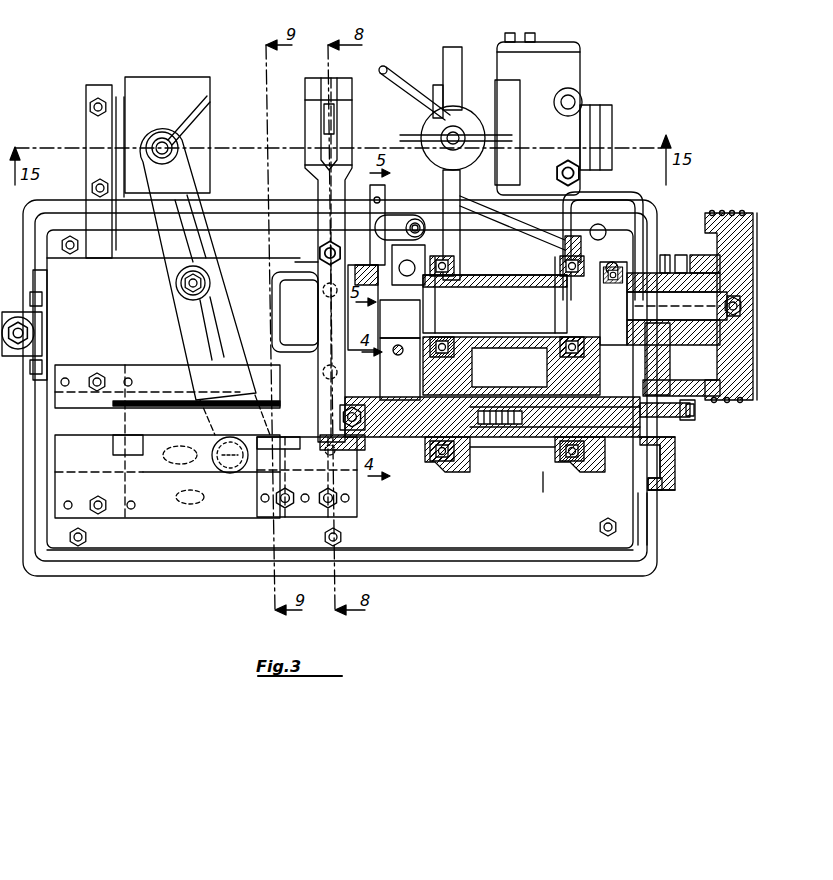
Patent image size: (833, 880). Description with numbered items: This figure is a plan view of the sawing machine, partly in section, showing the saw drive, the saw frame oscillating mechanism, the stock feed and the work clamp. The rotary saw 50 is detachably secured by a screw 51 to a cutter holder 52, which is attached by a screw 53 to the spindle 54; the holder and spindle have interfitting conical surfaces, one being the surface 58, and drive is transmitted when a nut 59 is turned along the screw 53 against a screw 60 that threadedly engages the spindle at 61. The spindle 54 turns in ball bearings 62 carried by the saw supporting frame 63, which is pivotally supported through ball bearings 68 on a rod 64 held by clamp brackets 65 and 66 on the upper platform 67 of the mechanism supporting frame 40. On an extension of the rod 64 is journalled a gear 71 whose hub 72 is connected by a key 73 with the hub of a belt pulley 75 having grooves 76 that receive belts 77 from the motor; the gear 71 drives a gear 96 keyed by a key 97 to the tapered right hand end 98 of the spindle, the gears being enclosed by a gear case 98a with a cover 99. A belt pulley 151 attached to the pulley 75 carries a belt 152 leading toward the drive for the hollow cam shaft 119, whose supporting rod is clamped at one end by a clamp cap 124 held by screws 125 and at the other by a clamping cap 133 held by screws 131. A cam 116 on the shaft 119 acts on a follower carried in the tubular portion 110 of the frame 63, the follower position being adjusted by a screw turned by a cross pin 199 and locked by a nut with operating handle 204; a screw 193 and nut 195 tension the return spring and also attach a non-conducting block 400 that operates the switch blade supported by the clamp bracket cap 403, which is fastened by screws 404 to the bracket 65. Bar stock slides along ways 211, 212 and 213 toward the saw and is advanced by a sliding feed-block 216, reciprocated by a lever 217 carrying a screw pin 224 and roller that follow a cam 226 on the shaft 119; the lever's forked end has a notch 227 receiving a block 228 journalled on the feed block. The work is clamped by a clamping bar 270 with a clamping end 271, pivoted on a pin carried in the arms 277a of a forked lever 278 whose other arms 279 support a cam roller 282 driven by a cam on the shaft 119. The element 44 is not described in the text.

The clamp cap 124 is at (92, 130).
The screws 125 is at (98, 99).
The cam 226 is at (172, 86).
The screw pin 224 is at (170, 150).
The lever 217 is at (220, 302).
The cam shaft 119 is at (282, 102).
The cam roller 282 is at (322, 118).
The arms 279 is at (314, 140).
The forked lever 278 is at (320, 250).
The arms 277a is at (305, 260).
The clamping bar 270 is at (282, 320).
The screws 404 is at (398, 272).
The non-conducting block 400 is at (396, 228).
The nut 195 is at (415, 222).
The screw 193 is at (424, 226).
The clamp bracket cap 403 is at (405, 261).
The cross pin 199 is at (508, 136).
The operating handle 204 is at (394, 78).
The cam 116 is at (455, 50).
The tubular portion 110 is at (452, 122).
The clamping cap 133 is at (560, 76).
The screws 131 is at (574, 97).
The upper platform 67 is at (600, 228).
The clamp bracket 66 is at (620, 265).
The ball bearings 68 is at (450, 262).
The rod 64 is at (484, 300).
The conical surface 58 is at (486, 395).
The clamp bracket 65 is at (405, 358).
The rotary cutter or saw 50 is at (366, 456).
The screw 51 is at (390, 436).
The spindle 54 is at (468, 474).
The cutter holder 52 is at (428, 470).
The ball bearings 62 is at (442, 472).
The saw supporting frame 63 is at (543, 486).
The mechanism supporting frame 40 is at (715, 305).
The key 73 is at (722, 283).
The hub 72 is at (712, 332).
The key 97 is at (666, 386).
The gear 71 is at (658, 270).
The ring 44 is at (690, 265).
The belt pulley 151 is at (666, 256).
The belt 152 is at (682, 256).
The belt pulley 75 is at (755, 226).
The grooves 76 is at (706, 214).
The belts 77 is at (742, 212).
The screw 53 is at (680, 428).
The nut 59 is at (690, 436).
The screw 60 is at (676, 442).
The threaded engagement 61 is at (672, 460).
The tapered right hand end 98 is at (664, 468).
The gear 96 is at (662, 482).
The cover 99 is at (664, 494).
The gear case 98a is at (645, 510).
The way 211 is at (145, 364).
The way 212 is at (130, 490).
The way 213 is at (258, 488).
The sliding feed-block 216 is at (226, 474).
The notch 227 is at (213, 420).
The block 228 is at (223, 425).
The clamping end 271 is at (320, 420).